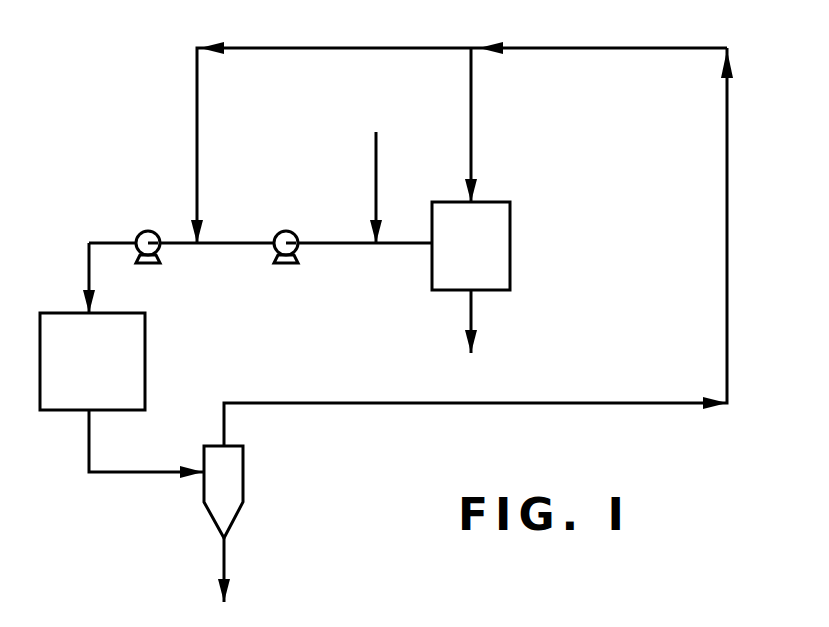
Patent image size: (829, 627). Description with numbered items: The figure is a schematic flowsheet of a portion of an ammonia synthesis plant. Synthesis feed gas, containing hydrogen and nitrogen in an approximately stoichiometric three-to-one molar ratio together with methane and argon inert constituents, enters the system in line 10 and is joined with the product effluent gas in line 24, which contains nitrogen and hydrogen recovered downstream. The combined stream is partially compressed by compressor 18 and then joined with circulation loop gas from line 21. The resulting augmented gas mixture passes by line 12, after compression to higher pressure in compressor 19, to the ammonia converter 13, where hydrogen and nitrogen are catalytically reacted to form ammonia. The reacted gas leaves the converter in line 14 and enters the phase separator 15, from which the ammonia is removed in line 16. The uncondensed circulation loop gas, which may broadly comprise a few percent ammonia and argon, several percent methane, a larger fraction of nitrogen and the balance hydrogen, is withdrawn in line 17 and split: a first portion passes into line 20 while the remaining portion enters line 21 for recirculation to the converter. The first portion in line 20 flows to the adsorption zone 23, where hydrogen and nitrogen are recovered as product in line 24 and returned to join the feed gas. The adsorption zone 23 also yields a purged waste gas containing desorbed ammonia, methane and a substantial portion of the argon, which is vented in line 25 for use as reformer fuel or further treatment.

The synthesis feed gas line 10 is at (375, 163).
The augmented gas mixture line 12 is at (90, 280).
The ammonia converter 13 is at (146, 357).
The reacted gas discharge line 14 is at (123, 471).
The phase separator 15 is at (245, 483).
The ammonia removal line 16 is at (227, 557).
The uncondensed gas line 17 is at (478, 405).
The compressor 18 is at (277, 232).
The compressor 19 is at (149, 231).
The first portion line 20 is at (470, 103).
The circulation loop gas line 21 is at (306, 47).
The adsorption zone 23 is at (511, 245).
The product effluent gas line 24 is at (416, 258).
The waste gas vent line 25 is at (472, 313).